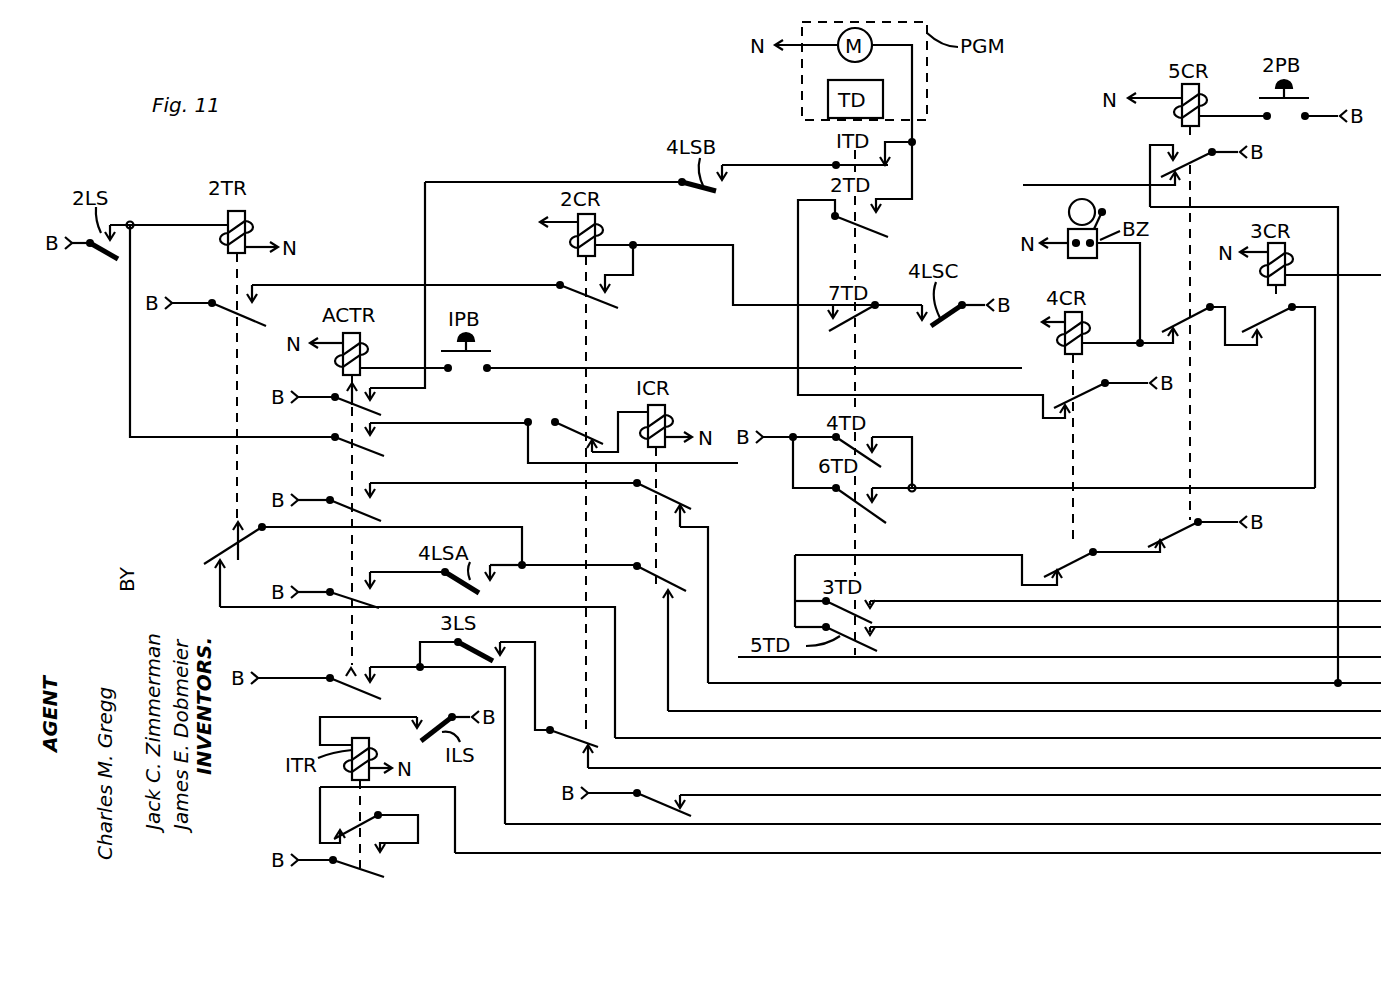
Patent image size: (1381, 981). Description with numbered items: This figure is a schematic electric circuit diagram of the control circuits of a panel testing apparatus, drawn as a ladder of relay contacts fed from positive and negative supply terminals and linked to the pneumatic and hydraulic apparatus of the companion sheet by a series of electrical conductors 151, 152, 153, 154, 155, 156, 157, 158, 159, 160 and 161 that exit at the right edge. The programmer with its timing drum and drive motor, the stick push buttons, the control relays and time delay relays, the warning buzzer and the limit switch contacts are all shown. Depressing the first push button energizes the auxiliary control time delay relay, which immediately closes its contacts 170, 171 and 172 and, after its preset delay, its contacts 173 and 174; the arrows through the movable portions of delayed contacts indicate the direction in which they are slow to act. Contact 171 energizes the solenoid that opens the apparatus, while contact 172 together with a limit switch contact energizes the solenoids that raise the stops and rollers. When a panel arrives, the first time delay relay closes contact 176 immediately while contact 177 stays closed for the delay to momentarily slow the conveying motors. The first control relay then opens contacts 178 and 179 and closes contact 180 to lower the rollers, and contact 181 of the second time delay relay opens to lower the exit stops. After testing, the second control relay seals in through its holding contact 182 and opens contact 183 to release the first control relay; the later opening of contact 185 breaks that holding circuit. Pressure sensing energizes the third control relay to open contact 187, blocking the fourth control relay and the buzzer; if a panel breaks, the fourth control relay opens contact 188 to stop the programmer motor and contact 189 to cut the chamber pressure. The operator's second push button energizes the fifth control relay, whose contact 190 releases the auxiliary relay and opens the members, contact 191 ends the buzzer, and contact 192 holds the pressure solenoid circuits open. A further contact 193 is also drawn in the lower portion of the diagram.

The electrical conductor 151 is at (1362, 275).
The electrical conductor 152 is at (1256, 601).
The electrical conductor 153 is at (1256, 627).
The electrical conductor 154 is at (1256, 657).
The electrical conductor 155 is at (1256, 683).
The electrical conductor 156 is at (1256, 711).
The electrical conductor 157 is at (1256, 738).
The electrical conductor 158 is at (1256, 768).
The electrical conductor 159 is at (1256, 795).
The electrical conductor 160 is at (1256, 824).
The electrical conductor 161 is at (1256, 853).
The contact of relay ACTR 170 is at (338, 450).
The contact of relay ACTR 171 is at (375, 512).
The contact of relay ACTR 172 is at (340, 590).
The time delayed contact of relay ACTR 173 is at (336, 410).
The time delayed contact of relay ACTR 174 is at (374, 687).
The contact of relay 1TR 176 is at (391, 874).
The contact of relay 1TR 177 is at (382, 814).
The contact of relay 1CR 178 is at (670, 500).
The contact of relay 1CR 179 is at (677, 590).
The contact of relay 1CR 180 is at (647, 802).
The contact of relay 2TR 181 is at (233, 550).
The holding contact of relay 2CR 182 is at (598, 296).
The contact of relay 2CR 183 is at (575, 425).
The contact of relay 2TR 185 is at (236, 300).
The contact of relay 3CR 187 is at (1274, 318).
The contact of relay 4CR 188 is at (1092, 392).
The contact of relay 4CR 189 is at (1080, 558).
The contact of relay 5CR 190 is at (1202, 165).
The contact of relay 5CR 191 is at (1193, 318).
The contact of relay 5CR 192 is at (1180, 533).
The relay contact 193 is at (569, 738).